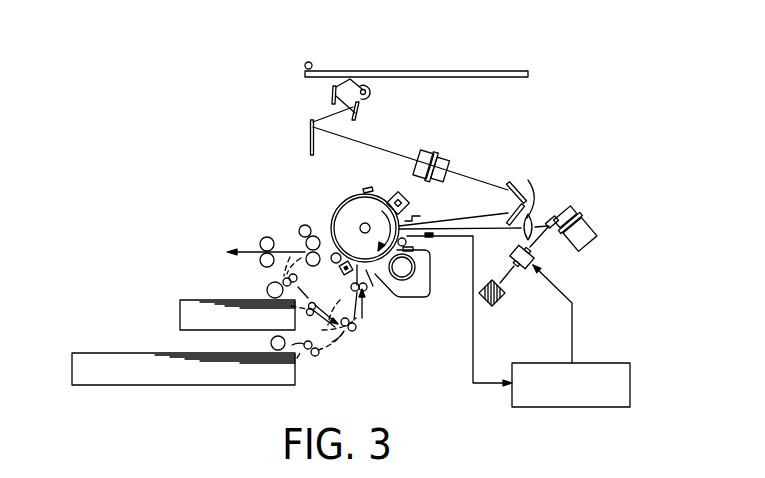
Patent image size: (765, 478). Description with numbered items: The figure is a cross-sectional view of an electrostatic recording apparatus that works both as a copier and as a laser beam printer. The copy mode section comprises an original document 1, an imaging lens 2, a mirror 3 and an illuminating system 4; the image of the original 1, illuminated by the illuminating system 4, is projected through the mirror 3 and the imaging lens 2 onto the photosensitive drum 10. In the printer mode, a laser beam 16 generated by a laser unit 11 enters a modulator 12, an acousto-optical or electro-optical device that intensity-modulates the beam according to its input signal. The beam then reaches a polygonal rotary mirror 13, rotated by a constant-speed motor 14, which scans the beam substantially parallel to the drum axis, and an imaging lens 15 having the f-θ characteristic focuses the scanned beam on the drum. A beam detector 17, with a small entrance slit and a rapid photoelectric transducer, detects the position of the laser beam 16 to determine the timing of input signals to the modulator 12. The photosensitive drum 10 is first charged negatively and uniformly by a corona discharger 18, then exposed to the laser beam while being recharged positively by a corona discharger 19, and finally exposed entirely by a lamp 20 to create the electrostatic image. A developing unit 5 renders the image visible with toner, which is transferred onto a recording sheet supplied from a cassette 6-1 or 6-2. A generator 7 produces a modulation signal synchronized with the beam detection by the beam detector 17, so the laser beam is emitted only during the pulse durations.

The original document 1 is at (497, 70).
The imaging lens 2 is at (448, 155).
The mirror 3 is at (311, 122).
The illuminating system 4 is at (369, 93).
The developing unit 5 is at (412, 298).
The cassette 6-1 is at (193, 307).
The cassette 6-2 is at (106, 364).
The generator 7 is at (621, 363).
The photosensitive drum 10 is at (333, 223).
The laser unit 11 is at (490, 307).
The modulator 12 is at (523, 268).
The polygonal rotary mirror 13 is at (577, 208).
The constant-speed motor 14 is at (588, 243).
The imaging lens 15 is at (524, 235).
The laser beam 16 is at (552, 216).
The beam detector 17 is at (432, 238).
The corona discharger 18 is at (403, 190).
The corona discharger 19 is at (421, 218).
The lamp 20 is at (426, 250).